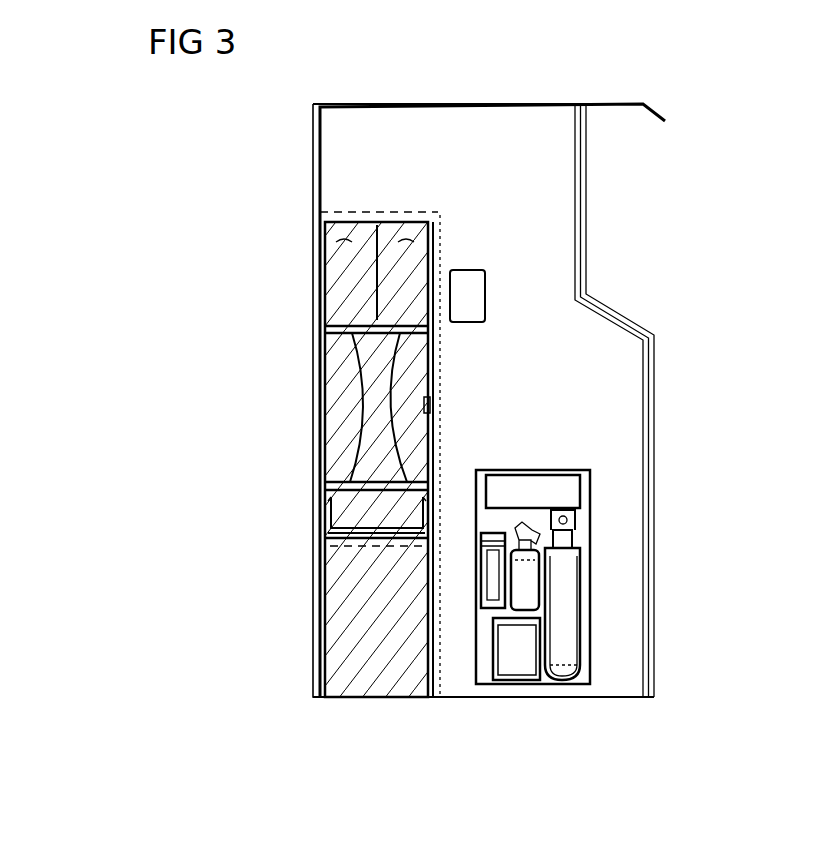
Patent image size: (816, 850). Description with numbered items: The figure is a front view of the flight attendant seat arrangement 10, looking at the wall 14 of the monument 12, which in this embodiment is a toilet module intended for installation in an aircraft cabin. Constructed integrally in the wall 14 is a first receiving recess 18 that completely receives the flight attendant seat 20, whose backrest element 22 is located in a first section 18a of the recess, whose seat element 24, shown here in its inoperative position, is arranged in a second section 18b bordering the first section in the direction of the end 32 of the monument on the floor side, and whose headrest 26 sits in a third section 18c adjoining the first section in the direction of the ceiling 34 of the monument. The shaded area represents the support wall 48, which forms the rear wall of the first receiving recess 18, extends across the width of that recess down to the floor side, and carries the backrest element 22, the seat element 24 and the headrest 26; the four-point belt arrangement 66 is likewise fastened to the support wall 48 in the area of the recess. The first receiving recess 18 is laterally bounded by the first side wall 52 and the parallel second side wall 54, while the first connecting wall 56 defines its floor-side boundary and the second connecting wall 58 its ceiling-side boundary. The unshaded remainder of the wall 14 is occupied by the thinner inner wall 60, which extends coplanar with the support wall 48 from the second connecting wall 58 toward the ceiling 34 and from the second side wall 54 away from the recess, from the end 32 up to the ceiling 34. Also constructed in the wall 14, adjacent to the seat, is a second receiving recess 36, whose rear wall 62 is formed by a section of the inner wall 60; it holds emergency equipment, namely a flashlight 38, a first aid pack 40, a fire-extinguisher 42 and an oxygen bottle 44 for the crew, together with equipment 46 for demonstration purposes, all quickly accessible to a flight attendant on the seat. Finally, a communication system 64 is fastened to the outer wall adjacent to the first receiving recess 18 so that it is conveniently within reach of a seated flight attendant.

The flight attendant seat arrangement 10 is at (664, 73).
The monument 12 is at (632, 122).
The wall 14 is at (480, 118).
The first receiving recess 18 is at (438, 215).
The first section of the receiving recess 18a is at (330, 453).
The second section of the receiving recess 18b is at (333, 543).
The third section of the receiving recess 18c is at (332, 321).
The flight attendant seat 20 is at (217, 415).
The backrest element 22 is at (343, 411).
The seat element 24 is at (342, 508).
The headrest 26 is at (338, 290).
The end of the monument on a floor side 32 is at (342, 698).
The ceiling of the monument 34 is at (362, 104).
The second receiving recess 36 is at (562, 469).
The flashlight 38 is at (492, 593).
The first aid pack 40 is at (522, 668).
The fire-extinguisher 42 is at (525, 598).
The oxygen bottle 44 is at (565, 578).
The equipment for demonstration purposes 46 is at (578, 490).
The support wall 48 is at (360, 625).
The first side wall 52 is at (340, 378).
The second side wall 54 is at (440, 418).
The first connecting wall 56 is at (342, 580).
The second connecting wall 58 is at (332, 212).
The inner wall 60 is at (556, 188).
The rear wall of the second receiving recess 62 is at (492, 527).
The communication system 64 is at (468, 294).
The belt arrangement 66 is at (427, 381).